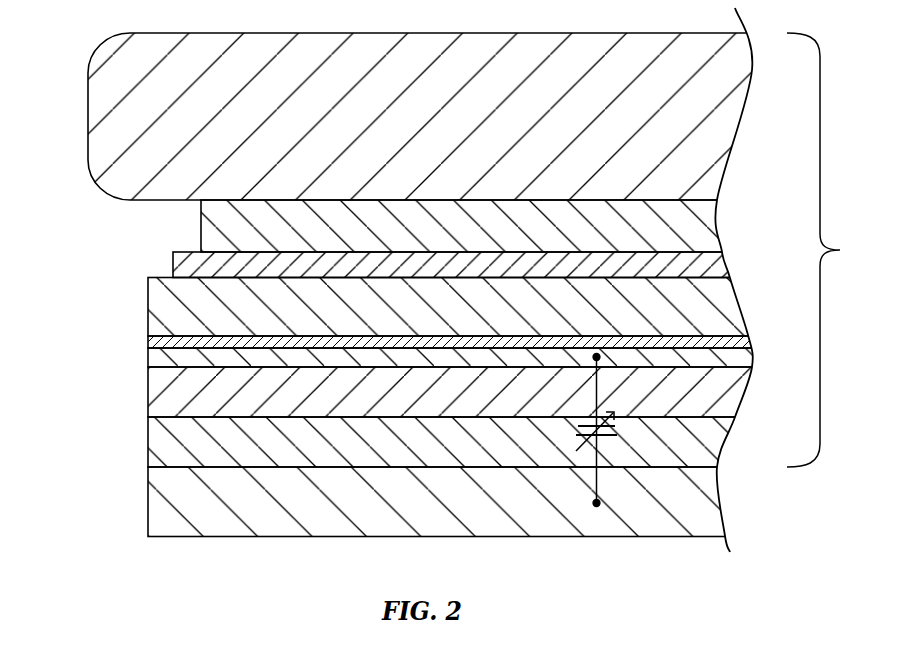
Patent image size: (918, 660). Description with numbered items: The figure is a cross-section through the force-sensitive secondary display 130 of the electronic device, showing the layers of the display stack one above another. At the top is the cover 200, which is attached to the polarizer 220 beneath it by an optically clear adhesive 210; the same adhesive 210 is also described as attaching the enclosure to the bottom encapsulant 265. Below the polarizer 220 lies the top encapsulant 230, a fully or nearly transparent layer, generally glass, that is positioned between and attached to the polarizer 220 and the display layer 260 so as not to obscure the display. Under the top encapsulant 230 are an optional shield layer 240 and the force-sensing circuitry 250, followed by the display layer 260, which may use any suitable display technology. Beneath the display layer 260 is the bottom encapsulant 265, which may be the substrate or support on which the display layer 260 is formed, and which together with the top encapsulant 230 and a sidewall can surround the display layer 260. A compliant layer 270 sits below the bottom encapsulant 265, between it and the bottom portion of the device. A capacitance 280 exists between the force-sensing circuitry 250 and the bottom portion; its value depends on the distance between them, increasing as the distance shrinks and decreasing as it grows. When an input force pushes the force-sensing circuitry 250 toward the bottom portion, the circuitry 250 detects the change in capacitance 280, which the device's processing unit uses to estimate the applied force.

The secondary display 130 is at (832, 250).
The cover 200 is at (88, 115).
The optically clear adhesive 210 is at (201, 221).
The polarizer 220 is at (173, 262).
The top encapsulant 230 is at (148, 303).
The shield layer 240 is at (148, 340).
The force-sensing circuitry 250 is at (148, 358).
The display layer 260 is at (148, 388).
The bottom encapsulant 265 is at (148, 496).
The compliant layer 270 is at (148, 440).
The capacitance 280 is at (598, 386).